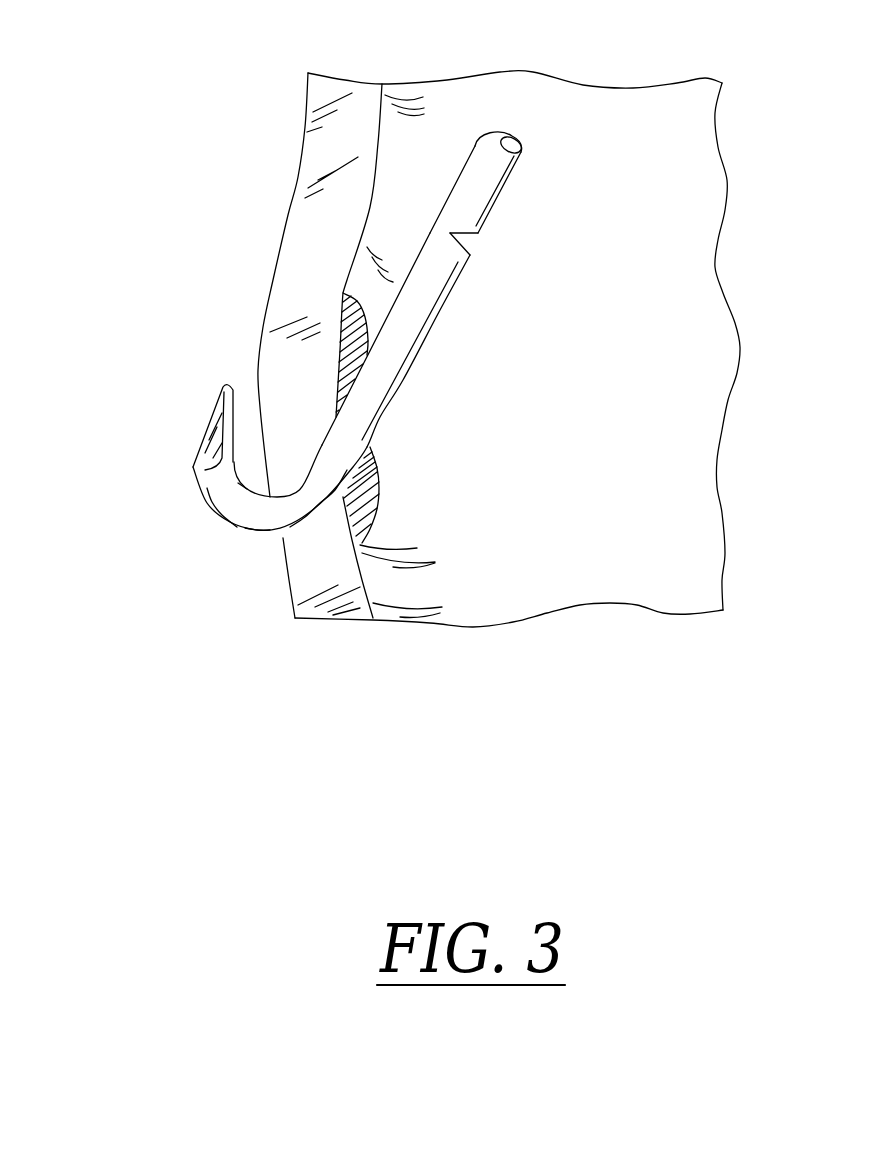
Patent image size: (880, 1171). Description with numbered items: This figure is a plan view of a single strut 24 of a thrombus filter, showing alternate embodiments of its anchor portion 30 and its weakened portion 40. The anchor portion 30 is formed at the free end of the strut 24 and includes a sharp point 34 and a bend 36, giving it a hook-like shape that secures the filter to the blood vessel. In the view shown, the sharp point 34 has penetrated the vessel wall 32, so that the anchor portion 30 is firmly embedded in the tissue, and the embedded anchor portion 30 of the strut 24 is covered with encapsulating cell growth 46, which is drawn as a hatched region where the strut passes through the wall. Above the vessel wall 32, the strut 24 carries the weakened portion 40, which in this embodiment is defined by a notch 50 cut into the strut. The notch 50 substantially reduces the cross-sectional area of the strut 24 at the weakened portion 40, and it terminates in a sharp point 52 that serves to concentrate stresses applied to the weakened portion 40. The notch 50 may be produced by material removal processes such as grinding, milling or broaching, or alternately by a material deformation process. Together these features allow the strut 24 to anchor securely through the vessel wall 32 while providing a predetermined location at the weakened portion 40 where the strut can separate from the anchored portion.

The strut 24 is at (482, 163).
The anchor portion 30 is at (213, 527).
The vessel wall 32 is at (325, 595).
The sharp point 34 is at (229, 386).
The bend 36 is at (262, 532).
The weakened portion 40 is at (502, 253).
The encapsulating cell growth 46 is at (370, 503).
The notch 50 is at (465, 243).
The sharp point 52 is at (450, 233).